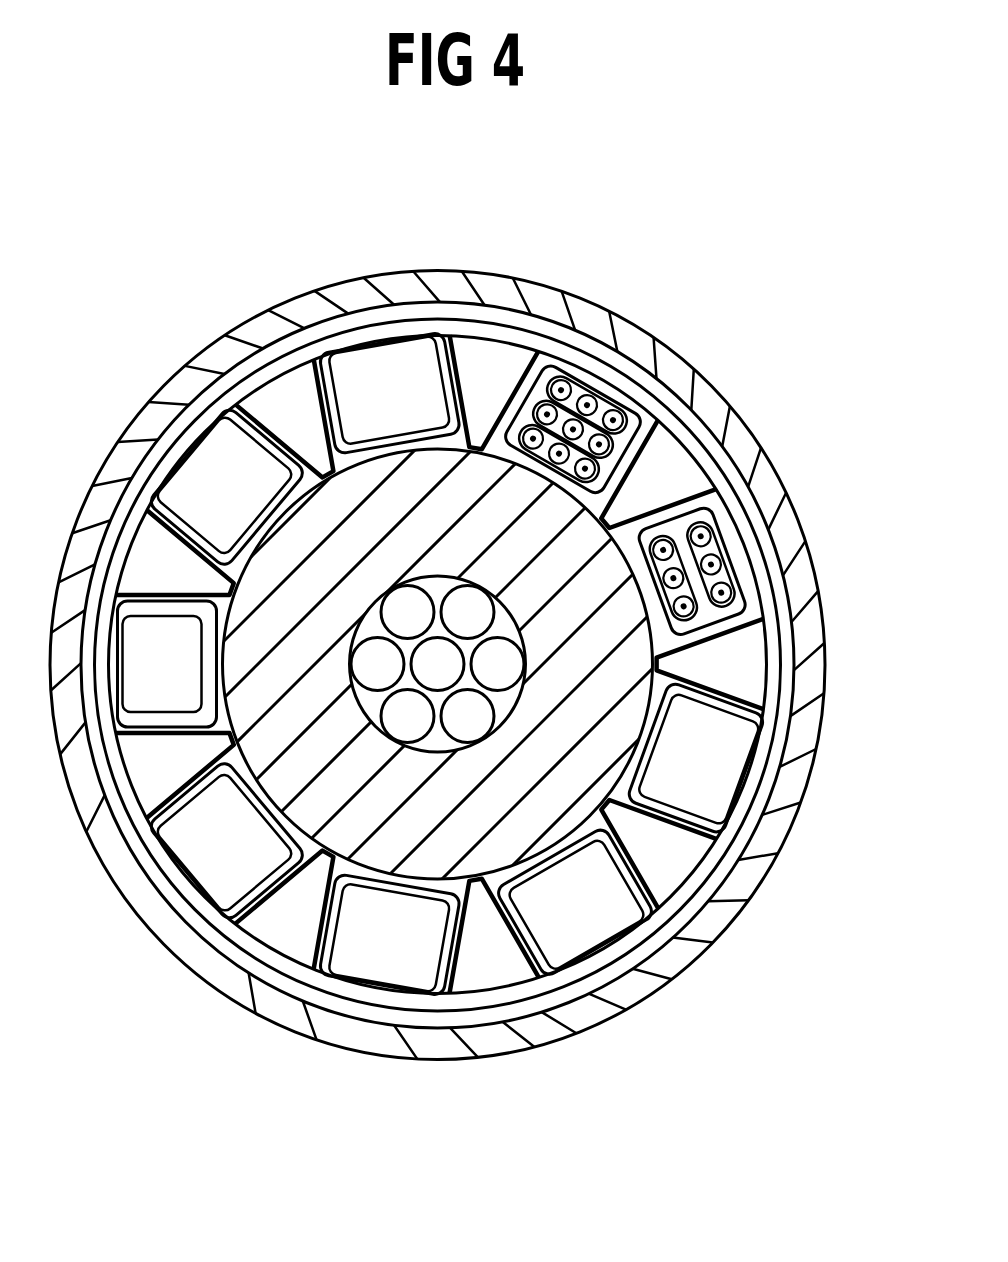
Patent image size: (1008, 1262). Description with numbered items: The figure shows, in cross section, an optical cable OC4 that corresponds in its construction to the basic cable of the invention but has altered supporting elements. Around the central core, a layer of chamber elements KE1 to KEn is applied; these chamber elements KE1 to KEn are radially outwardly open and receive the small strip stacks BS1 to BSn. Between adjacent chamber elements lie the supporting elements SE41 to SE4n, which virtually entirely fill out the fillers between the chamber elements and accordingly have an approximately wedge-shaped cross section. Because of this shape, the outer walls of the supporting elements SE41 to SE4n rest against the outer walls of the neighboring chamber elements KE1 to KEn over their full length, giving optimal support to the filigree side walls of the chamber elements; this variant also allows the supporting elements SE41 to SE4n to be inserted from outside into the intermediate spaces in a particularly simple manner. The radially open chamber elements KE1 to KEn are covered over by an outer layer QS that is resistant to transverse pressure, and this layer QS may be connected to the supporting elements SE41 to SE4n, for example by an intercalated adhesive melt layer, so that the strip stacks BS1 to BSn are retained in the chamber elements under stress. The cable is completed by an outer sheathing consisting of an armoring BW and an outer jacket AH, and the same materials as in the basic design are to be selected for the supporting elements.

The optical cable OC4 is at (476, 627).
The outer jacket AH is at (750, 877).
The armoring BW is at (663, 937).
The outer layer QS is at (610, 953).
The supporting element SE4n is at (487, 360).
The supporting element SE41 is at (663, 457).
The chamber element KEn is at (543, 357).
The chamber element KE1 is at (712, 497).
The strip stack BSn is at (604, 365).
The strip stack BS1 is at (755, 540).